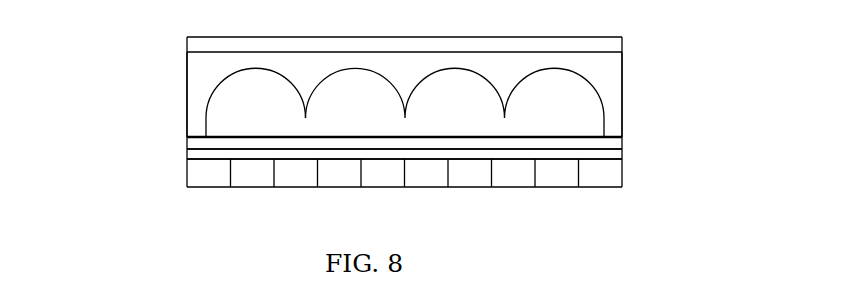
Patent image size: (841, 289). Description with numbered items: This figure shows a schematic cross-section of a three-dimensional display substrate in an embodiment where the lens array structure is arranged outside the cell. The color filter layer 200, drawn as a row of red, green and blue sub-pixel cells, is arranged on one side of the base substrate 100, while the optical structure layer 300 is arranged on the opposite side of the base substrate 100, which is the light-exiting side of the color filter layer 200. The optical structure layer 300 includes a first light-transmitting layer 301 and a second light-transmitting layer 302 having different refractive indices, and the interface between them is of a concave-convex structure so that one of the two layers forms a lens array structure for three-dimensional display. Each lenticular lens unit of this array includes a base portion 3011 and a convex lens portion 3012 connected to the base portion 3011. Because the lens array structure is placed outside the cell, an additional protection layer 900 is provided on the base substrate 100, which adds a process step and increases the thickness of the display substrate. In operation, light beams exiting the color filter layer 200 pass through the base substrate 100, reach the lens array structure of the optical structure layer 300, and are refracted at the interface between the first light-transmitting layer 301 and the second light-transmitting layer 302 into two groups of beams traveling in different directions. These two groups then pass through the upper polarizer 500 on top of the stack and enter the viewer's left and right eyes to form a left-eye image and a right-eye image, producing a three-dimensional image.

The upper polarizer 500 is at (608, 46).
The optical structure layer 300 is at (408, 101).
The second light-transmitting layer 302 is at (608, 80).
The first light-transmitting layer 301 is at (365, 102).
The convex lens portion 3012 is at (238, 78).
The base portion 3011 is at (206, 129).
The protection layer 900 is at (205, 142).
The base substrate 100 is at (612, 153).
The color filter layer 200 is at (612, 183).